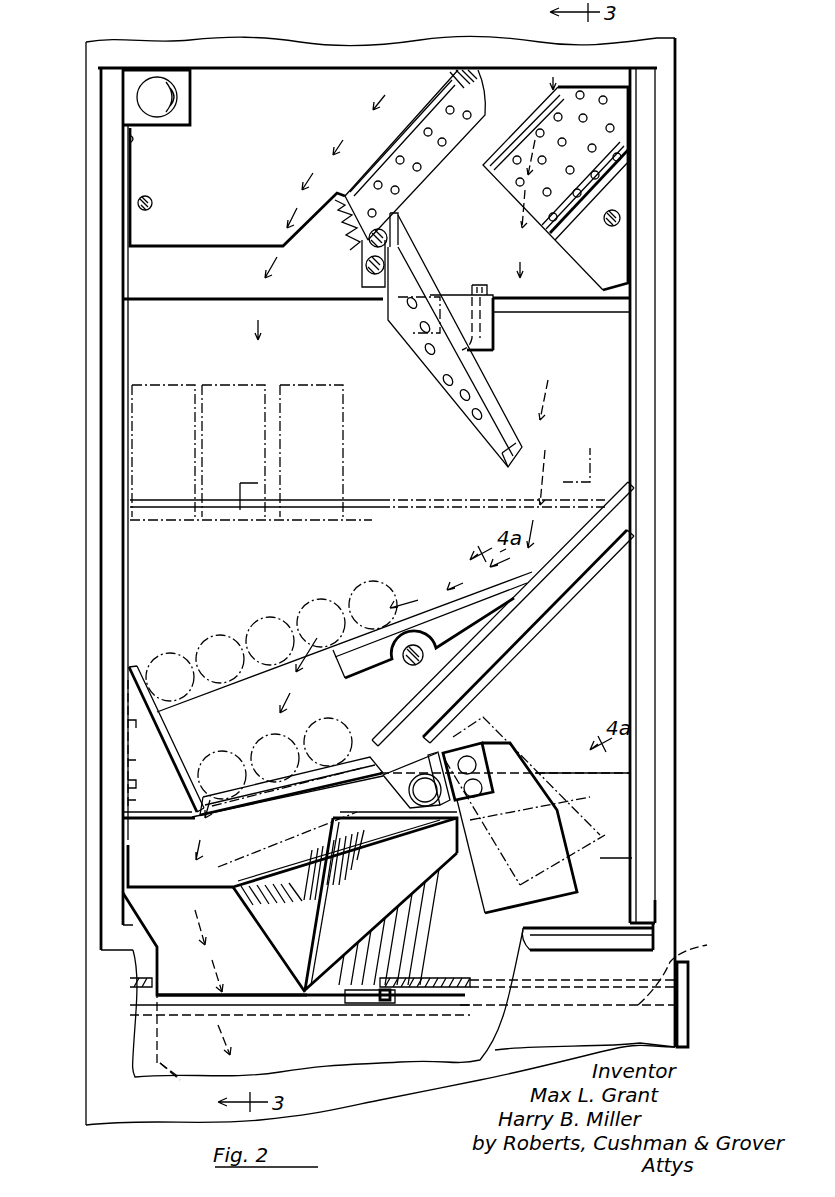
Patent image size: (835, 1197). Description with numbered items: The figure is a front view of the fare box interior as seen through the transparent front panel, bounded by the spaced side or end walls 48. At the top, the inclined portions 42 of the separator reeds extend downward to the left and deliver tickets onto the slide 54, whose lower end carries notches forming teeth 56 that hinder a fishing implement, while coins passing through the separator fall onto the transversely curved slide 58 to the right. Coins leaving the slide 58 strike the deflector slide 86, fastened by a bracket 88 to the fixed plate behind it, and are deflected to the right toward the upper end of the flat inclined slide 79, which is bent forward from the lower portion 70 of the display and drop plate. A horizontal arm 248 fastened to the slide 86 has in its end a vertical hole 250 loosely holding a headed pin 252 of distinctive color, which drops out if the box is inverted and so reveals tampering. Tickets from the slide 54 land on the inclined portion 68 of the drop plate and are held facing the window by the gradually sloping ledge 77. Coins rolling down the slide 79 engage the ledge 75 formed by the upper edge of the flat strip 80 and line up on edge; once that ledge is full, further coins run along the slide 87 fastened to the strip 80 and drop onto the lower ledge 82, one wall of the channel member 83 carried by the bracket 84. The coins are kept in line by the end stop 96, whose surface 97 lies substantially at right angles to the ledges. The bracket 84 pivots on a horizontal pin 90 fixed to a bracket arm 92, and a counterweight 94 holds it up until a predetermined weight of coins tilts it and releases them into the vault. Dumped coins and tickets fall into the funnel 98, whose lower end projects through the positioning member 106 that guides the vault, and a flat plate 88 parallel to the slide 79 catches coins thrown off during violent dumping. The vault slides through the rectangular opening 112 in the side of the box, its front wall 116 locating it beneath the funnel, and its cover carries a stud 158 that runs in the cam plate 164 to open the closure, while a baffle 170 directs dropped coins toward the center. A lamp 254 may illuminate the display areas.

The inclined portion 42 is at (380, 566).
The side or end walls 48 is at (88, 418).
The lamp 254 is at (178, 104).
The teeth 56 is at (245, 197).
The slide 54 is at (440, 152).
The slide 58 is at (622, 200).
The bracket 88 is at (362, 262).
The deflector slide 86 is at (450, 388).
The horizontal arm 248 is at (447, 302).
The headed pin 252 is at (492, 277).
The vertical hole 250 is at (473, 352).
The inclined portion 68 is at (168, 474).
The ledge 77 is at (150, 520).
The inclined portion 70 is at (135, 585).
The end stop 96 is at (132, 758).
The flat inclined slide 79 is at (540, 562).
The slide 87 is at (437, 618).
The ledge 75 is at (344, 650).
The flat strip 80 is at (344, 708).
The surface 97 is at (169, 739).
The channel member 83 is at (345, 761).
The ledge 82 is at (190, 824).
The bracket 84 is at (324, 840).
The funnel 98 is at (144, 882).
The horizontal pin 90 is at (430, 806).
The counterweight 94 is at (565, 885).
The bracket arm 92 is at (615, 820).
The positioning member 106 is at (478, 980).
The cam plate 164 is at (424, 988).
The stud 158 is at (366, 1018).
The rectangular opening 112 is at (636, 964).
The front wall 116 is at (685, 1002).
The baffle 170 is at (176, 1078).